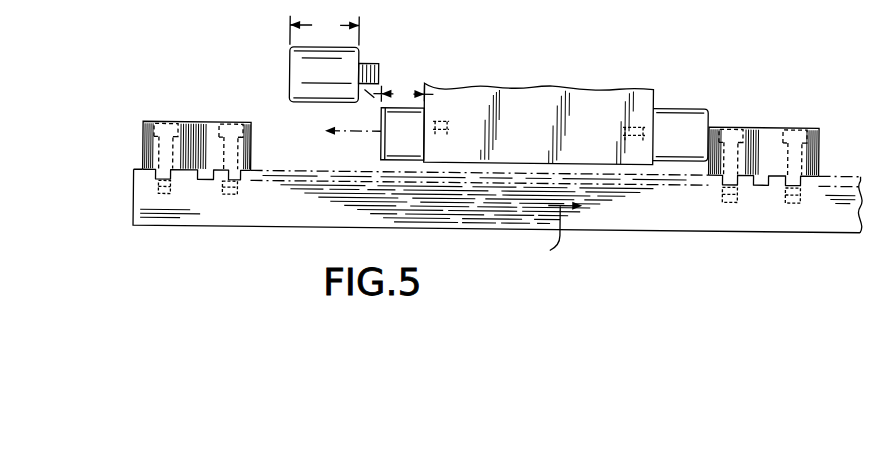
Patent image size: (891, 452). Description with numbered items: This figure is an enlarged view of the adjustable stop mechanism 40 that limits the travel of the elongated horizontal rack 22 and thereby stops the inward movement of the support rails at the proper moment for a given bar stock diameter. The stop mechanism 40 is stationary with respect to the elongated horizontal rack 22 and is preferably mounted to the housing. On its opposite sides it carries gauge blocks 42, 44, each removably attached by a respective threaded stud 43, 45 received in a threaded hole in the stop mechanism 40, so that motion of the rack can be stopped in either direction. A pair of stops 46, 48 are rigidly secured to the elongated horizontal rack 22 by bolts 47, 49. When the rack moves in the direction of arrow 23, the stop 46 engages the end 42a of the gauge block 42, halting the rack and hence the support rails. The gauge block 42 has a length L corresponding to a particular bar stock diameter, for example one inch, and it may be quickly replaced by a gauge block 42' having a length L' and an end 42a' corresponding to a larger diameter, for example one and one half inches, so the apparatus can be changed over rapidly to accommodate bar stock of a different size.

The elongated horizontal rack 22 is at (624, 222).
The arrow 23 is at (562, 238).
The adjustable stop mechanism 40 is at (556, 42).
The gauge block 42 is at (377, 139).
The end of gauge block 42a is at (337, 118).
The gauge block 42' is at (289, 58).
The end face of alternative boss 42a' is at (315, 65).
The threaded stud 43 is at (437, 119).
The gauge block 44 is at (682, 120).
The threaded stud 45 is at (628, 130).
The stop 46 is at (197, 127).
The bolt 47 is at (163, 123).
The stop 48 is at (768, 129).
The bolt 49 is at (805, 119).